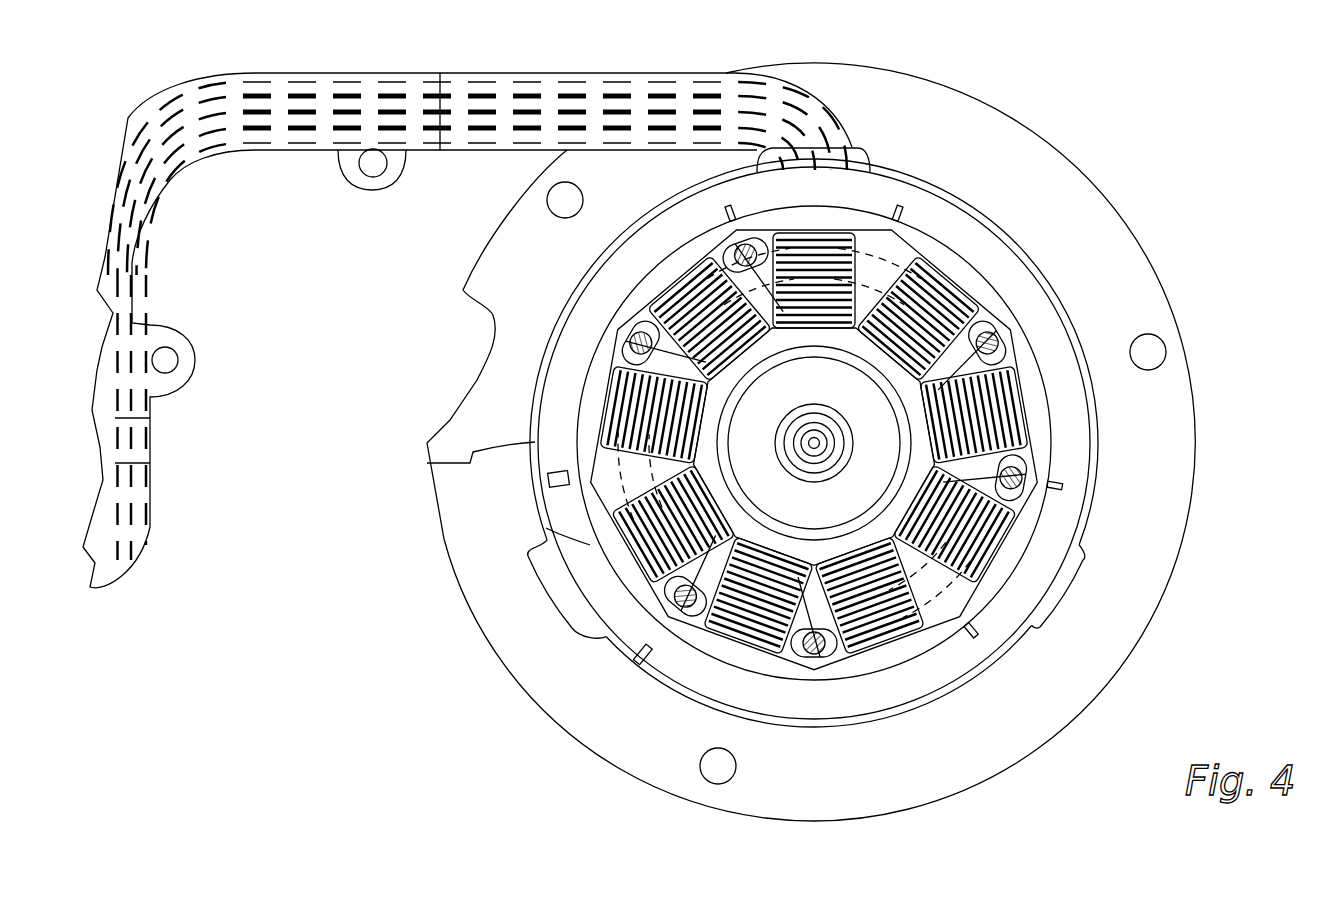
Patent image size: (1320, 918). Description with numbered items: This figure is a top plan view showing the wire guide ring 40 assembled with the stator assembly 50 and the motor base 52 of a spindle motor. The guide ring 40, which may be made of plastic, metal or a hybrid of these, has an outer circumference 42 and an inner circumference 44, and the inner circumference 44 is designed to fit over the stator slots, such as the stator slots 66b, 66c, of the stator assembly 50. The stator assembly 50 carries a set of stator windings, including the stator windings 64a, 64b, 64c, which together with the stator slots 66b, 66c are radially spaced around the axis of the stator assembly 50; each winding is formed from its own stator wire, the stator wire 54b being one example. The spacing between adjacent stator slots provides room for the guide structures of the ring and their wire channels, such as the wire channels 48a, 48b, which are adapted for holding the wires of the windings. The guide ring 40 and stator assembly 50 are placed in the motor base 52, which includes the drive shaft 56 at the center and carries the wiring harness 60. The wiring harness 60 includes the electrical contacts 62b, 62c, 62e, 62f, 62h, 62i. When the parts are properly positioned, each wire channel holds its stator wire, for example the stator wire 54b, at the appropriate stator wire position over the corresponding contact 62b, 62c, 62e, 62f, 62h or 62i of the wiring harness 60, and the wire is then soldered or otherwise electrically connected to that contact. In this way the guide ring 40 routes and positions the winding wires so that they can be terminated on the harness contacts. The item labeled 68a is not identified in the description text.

The wire guide ring 40 is at (530, 400).
The outer circumference 42 is at (470, 462).
The inner circumference 44 is at (596, 348).
The wire channel 48a is at (548, 481).
The wire channel 48b is at (648, 657).
The stator assembly 50 is at (632, 276).
The motor base 52 is at (1200, 440).
The stator wire 54b is at (566, 562).
The drive shaft 56 is at (830, 418).
The wiring harness 60 is at (588, 72).
The electrical contact 62b is at (697, 618).
The electrical contact 62c is at (830, 660).
The electrical contact 62e is at (1022, 488).
The electrical contact 62f is at (990, 332).
The electrical contact 62h is at (740, 240).
The electrical contact 62i is at (612, 330).
The stator winding 64a is at (606, 412).
The stator winding 64b is at (640, 565).
The stator winding 64c is at (938, 628).
The stator slot 66b is at (546, 528).
The stator slot 66c is at (856, 663).
The insulator pad 68a is at (580, 428).